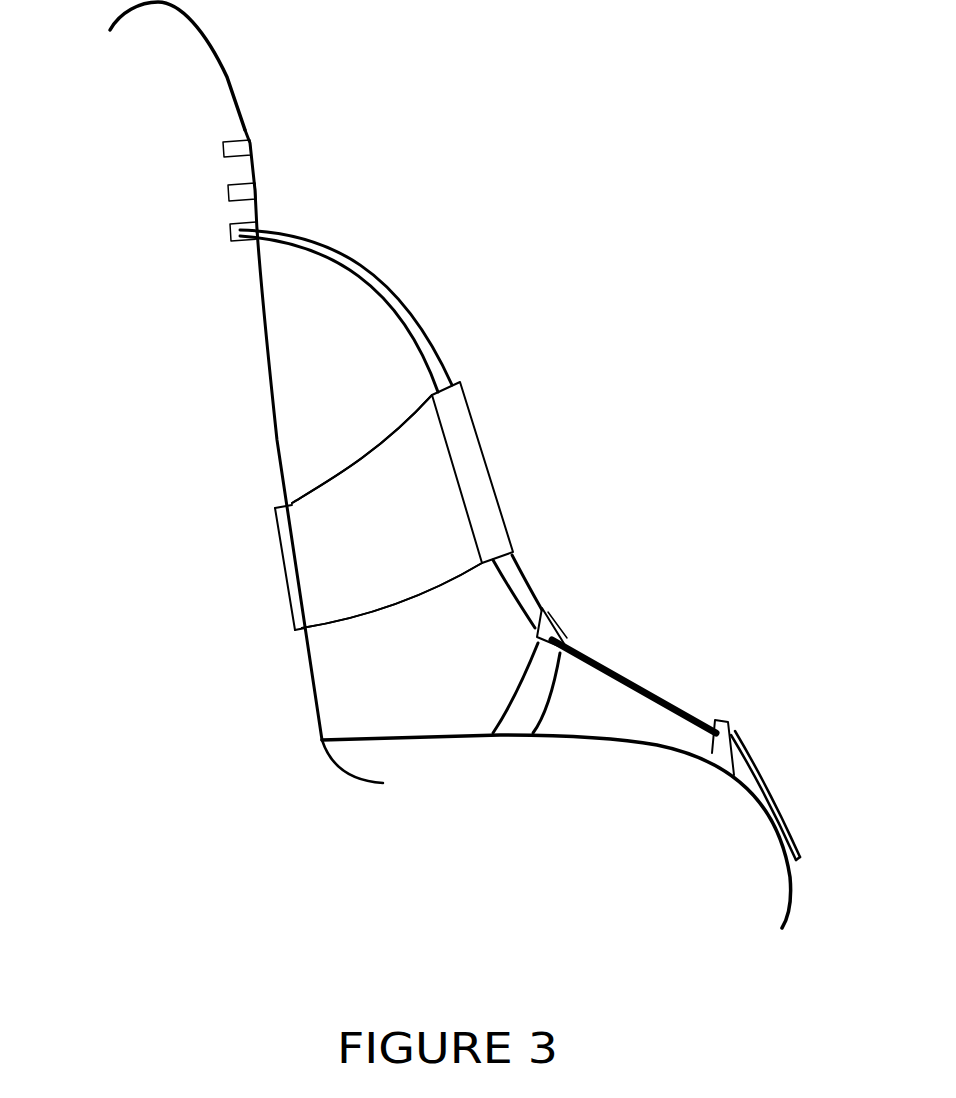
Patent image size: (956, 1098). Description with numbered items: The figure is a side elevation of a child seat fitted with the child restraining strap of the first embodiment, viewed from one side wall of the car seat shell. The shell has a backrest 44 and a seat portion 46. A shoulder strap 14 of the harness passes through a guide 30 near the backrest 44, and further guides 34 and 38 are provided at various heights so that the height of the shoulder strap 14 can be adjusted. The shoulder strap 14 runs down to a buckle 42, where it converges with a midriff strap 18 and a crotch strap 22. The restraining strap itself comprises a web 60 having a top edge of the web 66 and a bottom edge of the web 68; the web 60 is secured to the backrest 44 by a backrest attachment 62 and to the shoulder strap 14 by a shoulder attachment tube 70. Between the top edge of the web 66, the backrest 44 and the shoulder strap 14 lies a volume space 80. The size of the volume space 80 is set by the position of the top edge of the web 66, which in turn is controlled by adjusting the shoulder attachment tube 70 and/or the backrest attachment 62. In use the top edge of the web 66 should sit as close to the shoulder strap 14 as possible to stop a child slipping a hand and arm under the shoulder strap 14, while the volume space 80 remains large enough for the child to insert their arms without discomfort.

The shoulder strap 14 is at (383, 270).
The midriff strap 18 is at (515, 697).
The crotch strap 22 is at (627, 685).
The guide 30 is at (257, 227).
The guide 34 is at (255, 190).
The guide 38 is at (252, 145).
The buckle 42 is at (558, 625).
The backrest 44 is at (185, 37).
The seat portion 46 is at (672, 780).
The web 60 is at (410, 551).
The backrest attachment 62 is at (283, 557).
The top edge of the web 66 is at (345, 473).
The bottom edge of the web 68 is at (397, 607).
The shoulder attachment tube 70 is at (482, 473).
The volume space 80 is at (298, 348).